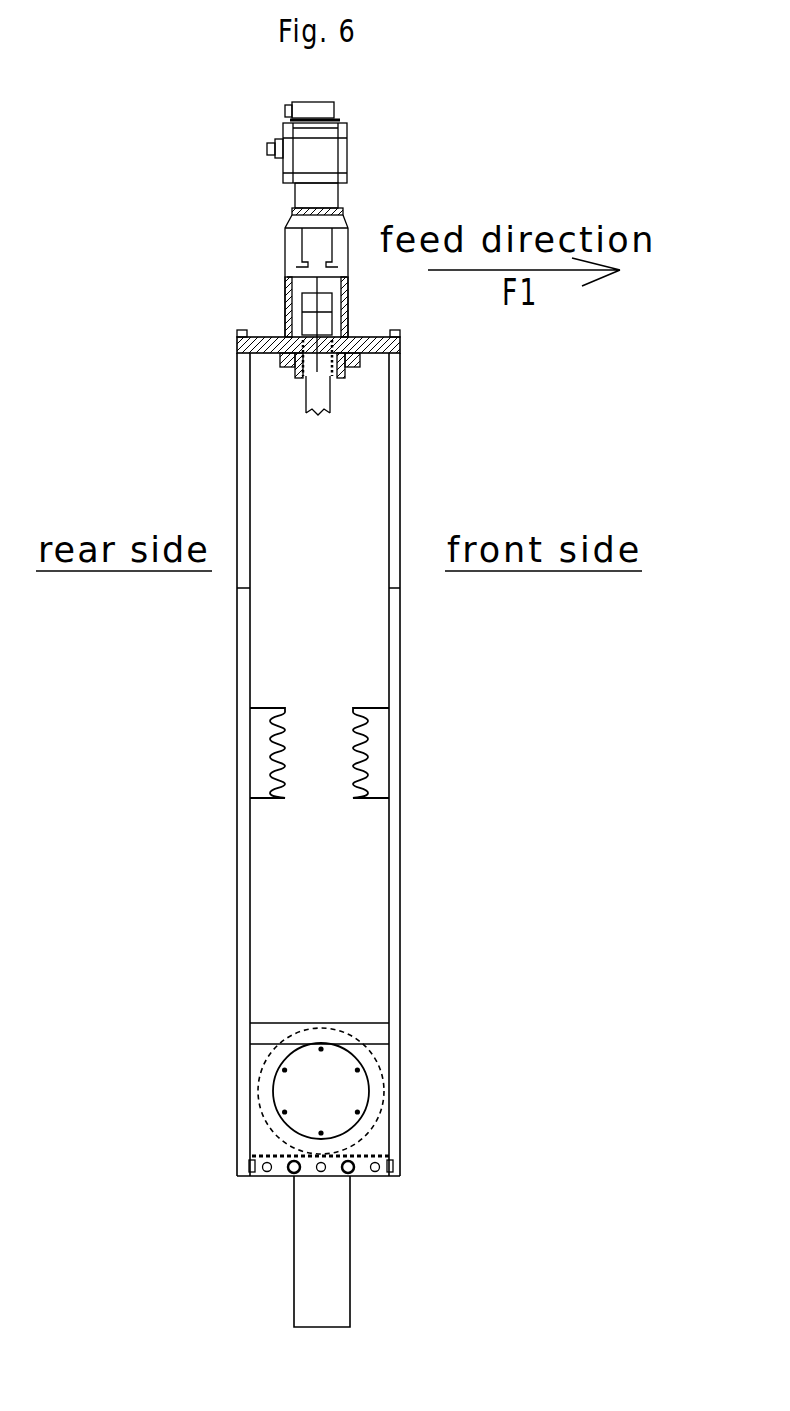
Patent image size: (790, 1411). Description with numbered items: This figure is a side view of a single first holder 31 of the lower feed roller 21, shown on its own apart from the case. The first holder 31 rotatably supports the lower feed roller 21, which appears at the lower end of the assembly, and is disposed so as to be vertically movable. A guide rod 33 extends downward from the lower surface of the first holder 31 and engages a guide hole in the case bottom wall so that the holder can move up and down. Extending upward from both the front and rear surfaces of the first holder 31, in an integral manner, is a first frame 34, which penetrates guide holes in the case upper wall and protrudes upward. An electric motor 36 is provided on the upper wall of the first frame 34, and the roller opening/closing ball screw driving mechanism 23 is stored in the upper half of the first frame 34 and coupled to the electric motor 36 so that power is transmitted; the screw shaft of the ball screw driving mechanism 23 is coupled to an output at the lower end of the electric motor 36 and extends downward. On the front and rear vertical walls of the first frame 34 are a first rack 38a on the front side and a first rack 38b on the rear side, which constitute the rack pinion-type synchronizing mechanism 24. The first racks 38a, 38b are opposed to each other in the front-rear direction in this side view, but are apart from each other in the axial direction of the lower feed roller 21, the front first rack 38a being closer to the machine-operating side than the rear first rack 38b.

The electric motor 36 is at (302, 158).
The roller opening/closing ball screw driving mechanism 23 is at (326, 397).
The rack pinion-type synchronizing mechanism 24 is at (332, 668).
The first rack on the front side 38a is at (372, 757).
The first rack on the rear side 38b is at (262, 768).
The first frame 34 is at (248, 936).
The lower feed roller 21 is at (323, 1033).
The first holder 31 is at (375, 1138).
The guide rod 33 is at (313, 1247).